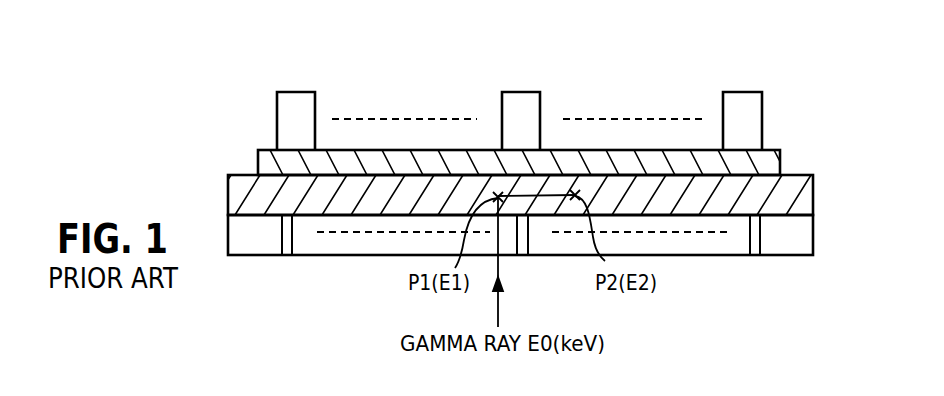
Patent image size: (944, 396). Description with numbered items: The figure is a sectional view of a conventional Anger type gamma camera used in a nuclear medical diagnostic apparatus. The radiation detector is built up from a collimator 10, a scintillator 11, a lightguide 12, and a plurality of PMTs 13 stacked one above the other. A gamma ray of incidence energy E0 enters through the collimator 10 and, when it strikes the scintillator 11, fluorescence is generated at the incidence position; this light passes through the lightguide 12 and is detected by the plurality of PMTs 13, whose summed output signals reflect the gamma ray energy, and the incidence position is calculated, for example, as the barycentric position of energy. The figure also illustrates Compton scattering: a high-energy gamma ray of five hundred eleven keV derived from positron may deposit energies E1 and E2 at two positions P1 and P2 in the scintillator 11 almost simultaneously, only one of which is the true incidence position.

The collimator 10 is at (813, 230).
The scintillator 11 is at (813, 192).
The lightguide 12 is at (772, 162).
The PMTs (PhotoMultiplier Tubes) 13 is at (302, 98).